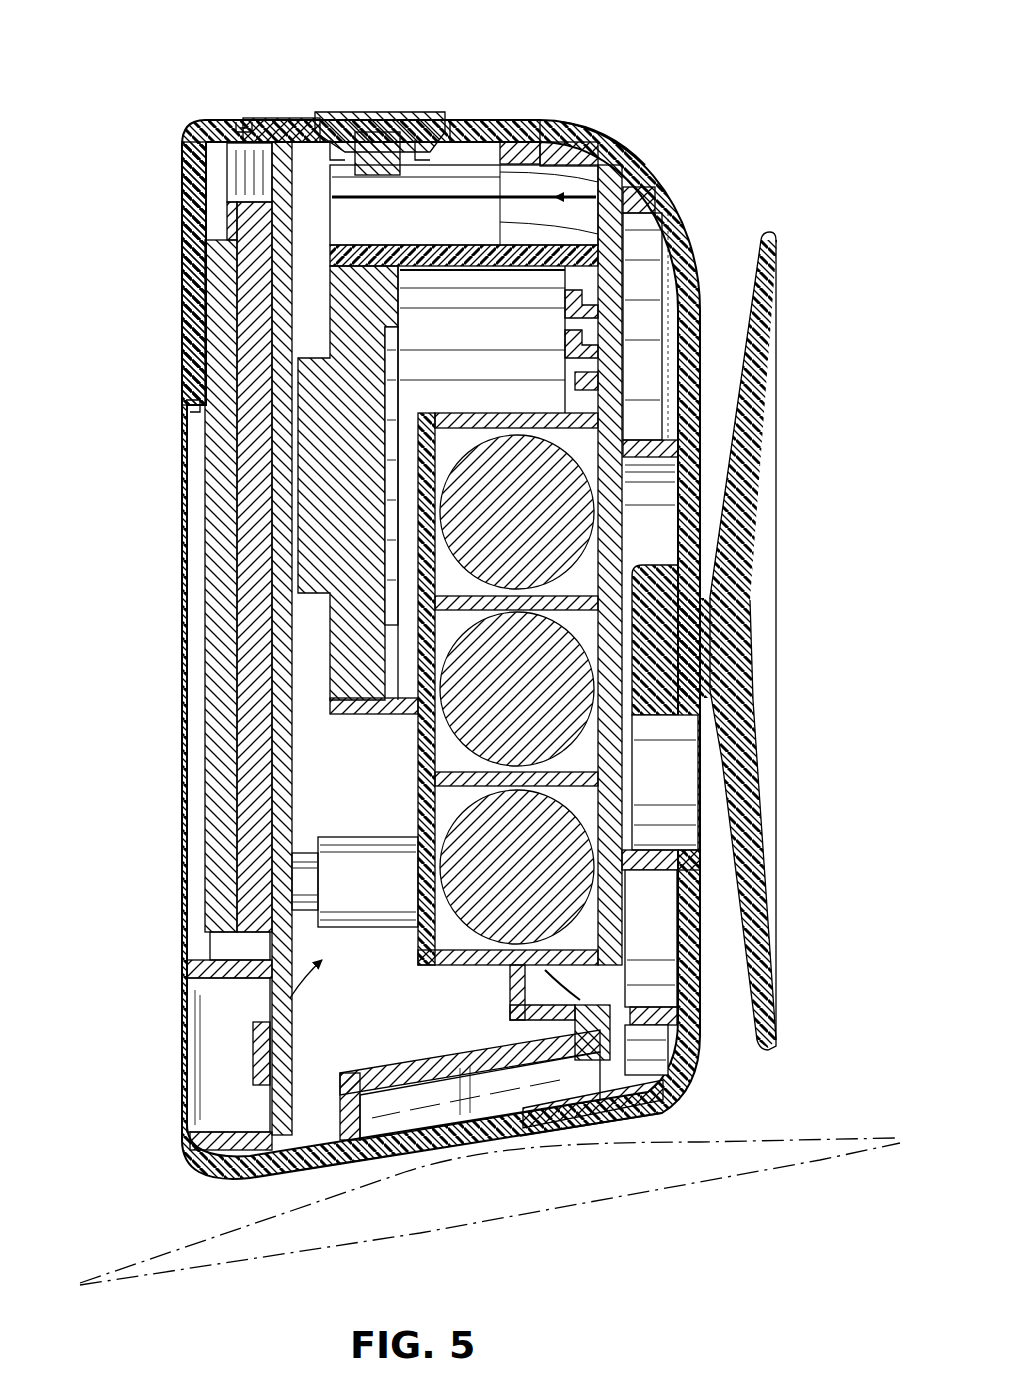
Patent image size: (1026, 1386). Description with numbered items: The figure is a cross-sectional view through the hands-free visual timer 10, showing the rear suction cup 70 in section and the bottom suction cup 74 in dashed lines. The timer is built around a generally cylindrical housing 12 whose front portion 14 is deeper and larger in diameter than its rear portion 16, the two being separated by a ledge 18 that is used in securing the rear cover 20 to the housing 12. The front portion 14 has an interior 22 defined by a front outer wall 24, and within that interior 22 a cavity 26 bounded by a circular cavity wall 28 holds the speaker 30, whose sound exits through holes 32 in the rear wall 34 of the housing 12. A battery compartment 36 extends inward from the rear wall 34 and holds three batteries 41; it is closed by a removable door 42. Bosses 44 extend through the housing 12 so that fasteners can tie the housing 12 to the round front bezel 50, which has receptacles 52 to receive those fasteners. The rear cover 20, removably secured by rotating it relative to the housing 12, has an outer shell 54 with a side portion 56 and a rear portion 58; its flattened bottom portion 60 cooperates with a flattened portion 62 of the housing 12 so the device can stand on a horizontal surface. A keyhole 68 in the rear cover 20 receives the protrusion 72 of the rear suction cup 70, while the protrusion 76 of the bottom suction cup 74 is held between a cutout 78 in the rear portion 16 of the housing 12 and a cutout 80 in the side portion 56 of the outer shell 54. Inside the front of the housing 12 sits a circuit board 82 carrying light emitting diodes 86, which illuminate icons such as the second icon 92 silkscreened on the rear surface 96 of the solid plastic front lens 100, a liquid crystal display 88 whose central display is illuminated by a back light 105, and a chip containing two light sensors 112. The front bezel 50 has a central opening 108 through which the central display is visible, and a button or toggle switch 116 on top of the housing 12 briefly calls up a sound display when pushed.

The hands-free visual timer 10 is at (88, 44).
The housing 12 is at (462, 116).
The front portion 14 is at (243, 126).
The rear portion 16 is at (622, 162).
The ledge 18 is at (512, 142).
The rear cover 20 is at (616, 134).
The interior 22 is at (200, 985).
The front outer wall 24 is at (268, 118).
The cavity 26 is at (398, 298).
The circular cavity wall 28 is at (362, 714).
The speaker 30 is at (312, 483).
The holes 32 is at (600, 300).
The rear wall 34 is at (640, 242).
The battery compartment 36 is at (452, 440).
The batteries 41 is at (517, 689).
The door 42 is at (645, 808).
The bosses 44 is at (372, 860).
The front bezel 50 is at (190, 125).
The receptacles 52 is at (305, 858).
The outer shell 54 is at (688, 210).
The side portion 56 is at (553, 130).
The rear portion 58 is at (682, 1000).
The flattened bottom portion 60 is at (565, 1134).
The flattened portion 62 is at (383, 1166).
The keyhole 68 is at (660, 742).
The rear suction cup 70 is at (780, 468).
The protrusion 72 is at (650, 565).
The bottom suction cup 74 is at (148, 1262).
The protrusion 76 is at (422, 1062).
The cutout 78 is at (446, 1142).
The cutout 80 is at (512, 1130).
The circuit board 82 is at (287, 146).
The light emitting diodes 86 is at (268, 1040).
The liquid crystal display 88 is at (217, 545).
The second icon 92 is at (229, 1064).
The rear surface 96 is at (188, 754).
The front lens 100 is at (178, 686).
The back light 105 is at (255, 605).
The central opening 108 is at (190, 410).
The light sensors 112 is at (225, 168).
The button or toggle switch 116 is at (380, 112).